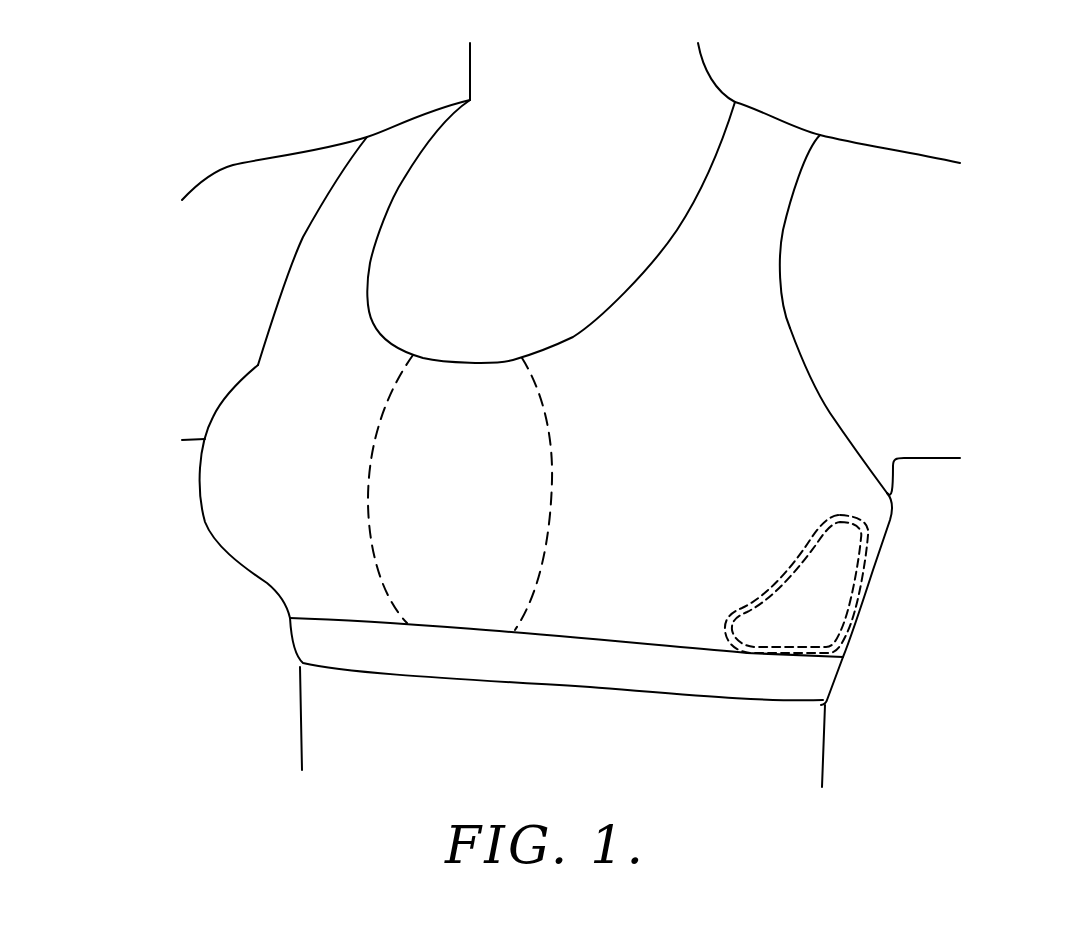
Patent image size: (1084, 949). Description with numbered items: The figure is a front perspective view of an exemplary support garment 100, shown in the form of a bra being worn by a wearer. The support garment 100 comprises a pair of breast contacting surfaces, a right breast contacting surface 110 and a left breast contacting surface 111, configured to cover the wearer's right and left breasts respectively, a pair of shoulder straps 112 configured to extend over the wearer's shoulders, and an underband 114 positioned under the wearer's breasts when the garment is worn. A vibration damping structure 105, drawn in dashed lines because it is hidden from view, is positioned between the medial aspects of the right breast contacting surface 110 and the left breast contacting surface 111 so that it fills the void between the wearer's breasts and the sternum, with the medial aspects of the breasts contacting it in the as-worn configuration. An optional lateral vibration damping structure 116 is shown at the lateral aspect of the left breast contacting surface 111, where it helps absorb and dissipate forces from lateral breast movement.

The support garment 100 is at (150, 321).
The vibration damping structure 105 is at (437, 585).
The right breast contacting surface 110 is at (230, 502).
The left breast contacting surface 111 is at (808, 432).
The shoulder straps 112 is at (400, 132).
The underband 114 is at (757, 688).
The lateral vibration damping structure 116 is at (864, 620).